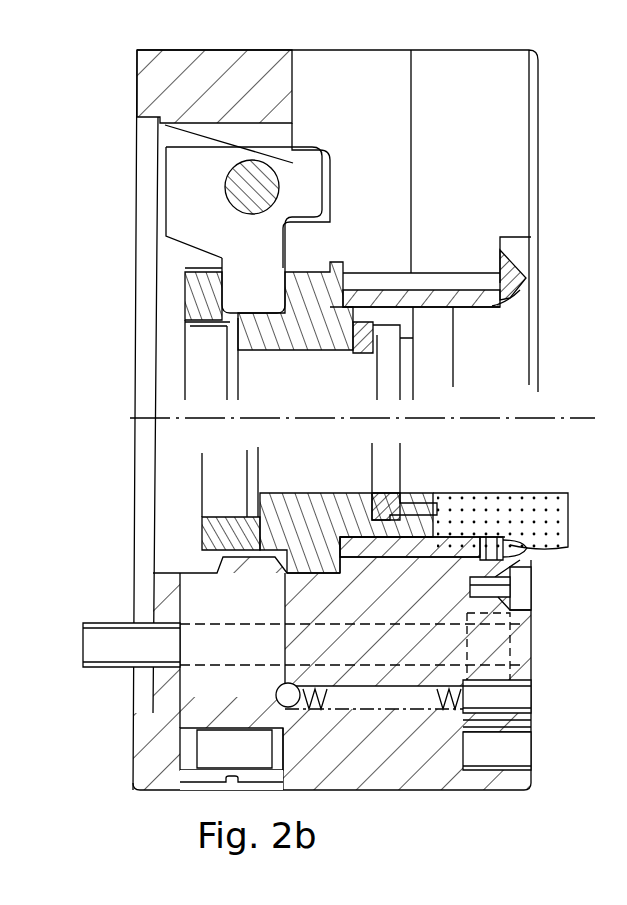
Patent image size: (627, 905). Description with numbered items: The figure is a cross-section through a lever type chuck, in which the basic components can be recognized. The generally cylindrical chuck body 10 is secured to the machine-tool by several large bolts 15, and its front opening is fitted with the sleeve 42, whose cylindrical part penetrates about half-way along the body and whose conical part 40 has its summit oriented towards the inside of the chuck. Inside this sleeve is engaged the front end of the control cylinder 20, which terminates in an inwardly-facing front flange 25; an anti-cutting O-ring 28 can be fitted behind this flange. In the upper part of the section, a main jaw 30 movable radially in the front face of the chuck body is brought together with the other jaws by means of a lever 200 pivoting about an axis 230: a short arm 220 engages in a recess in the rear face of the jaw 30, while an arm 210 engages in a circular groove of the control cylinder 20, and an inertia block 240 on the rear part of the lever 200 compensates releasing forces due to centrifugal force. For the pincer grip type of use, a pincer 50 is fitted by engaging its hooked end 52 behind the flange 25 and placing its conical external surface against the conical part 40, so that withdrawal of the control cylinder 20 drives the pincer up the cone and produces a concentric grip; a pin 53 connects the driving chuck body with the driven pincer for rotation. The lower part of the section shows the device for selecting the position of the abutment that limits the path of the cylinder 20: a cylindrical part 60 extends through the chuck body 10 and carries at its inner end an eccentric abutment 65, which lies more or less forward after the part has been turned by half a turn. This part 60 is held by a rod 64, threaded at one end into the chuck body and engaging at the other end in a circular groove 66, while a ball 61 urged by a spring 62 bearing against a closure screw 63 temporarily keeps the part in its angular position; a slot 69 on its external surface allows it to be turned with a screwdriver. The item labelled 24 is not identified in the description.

The chuck body 10 is at (168, 72).
The control cylinder 20 is at (183, 314).
The main jaw 30 is at (497, 137).
The conical part 40 is at (492, 306).
The sleeve 42 is at (538, 276).
The flange 25 is at (415, 348).
The anti-cutting O-ring 28 is at (370, 360).
The bolt 15 is at (107, 645).
The piston 24 is at (298, 568).
The pincer 50 is at (528, 500).
The hooked end 52 is at (410, 498).
The pin 53 is at (508, 540).
The cylindrical part 60 is at (203, 682).
The ball 61 is at (203, 717).
The spring 62 is at (427, 680).
The closure screw 63 is at (505, 697).
The rod 64 is at (518, 749).
The eccentric abutment 65 is at (243, 567).
The circular groove 66 is at (187, 743).
The slot 69 is at (231, 781).
The lever 200 is at (237, 238).
The arm 210 is at (222, 262).
The short arm 220 is at (200, 130).
The axis 230 is at (226, 180).
The inertia block 240 is at (178, 212).